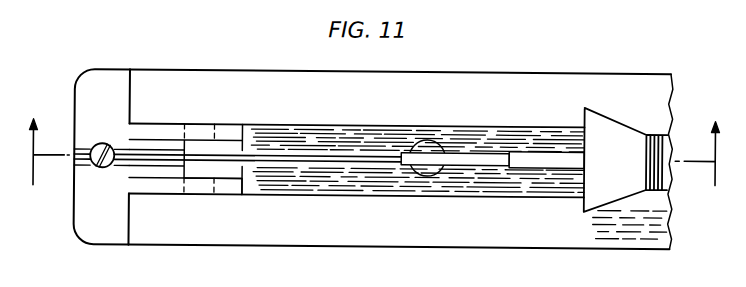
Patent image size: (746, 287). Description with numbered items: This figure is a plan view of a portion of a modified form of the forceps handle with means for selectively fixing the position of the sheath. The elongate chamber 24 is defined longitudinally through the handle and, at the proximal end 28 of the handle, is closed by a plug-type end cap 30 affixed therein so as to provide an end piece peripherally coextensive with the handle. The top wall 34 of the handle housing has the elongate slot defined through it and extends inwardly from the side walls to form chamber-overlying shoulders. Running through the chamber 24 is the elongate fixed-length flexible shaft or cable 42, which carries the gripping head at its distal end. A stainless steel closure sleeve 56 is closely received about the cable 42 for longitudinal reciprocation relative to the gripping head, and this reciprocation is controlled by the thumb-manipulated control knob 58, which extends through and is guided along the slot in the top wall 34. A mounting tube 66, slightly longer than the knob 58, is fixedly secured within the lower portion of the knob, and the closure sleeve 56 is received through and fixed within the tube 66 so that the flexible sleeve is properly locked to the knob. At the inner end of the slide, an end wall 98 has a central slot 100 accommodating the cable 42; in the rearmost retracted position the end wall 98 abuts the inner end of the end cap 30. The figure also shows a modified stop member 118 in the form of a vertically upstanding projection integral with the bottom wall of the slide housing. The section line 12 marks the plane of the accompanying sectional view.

The section line 12- 12 is at (374, 140).
The chamber 24 is at (317, 135).
The proximal end 28 is at (128, 215).
The end cap 30 is at (107, 66).
The top wall 34 is at (443, 74).
The cable 42 is at (271, 144).
The closure sleeve 56 is at (474, 142).
The control knob 58 is at (621, 95).
The mounting tube 66 is at (540, 140).
The end wall 98 is at (202, 123).
The slot 100 is at (216, 165).
The stop member 118 is at (443, 170).